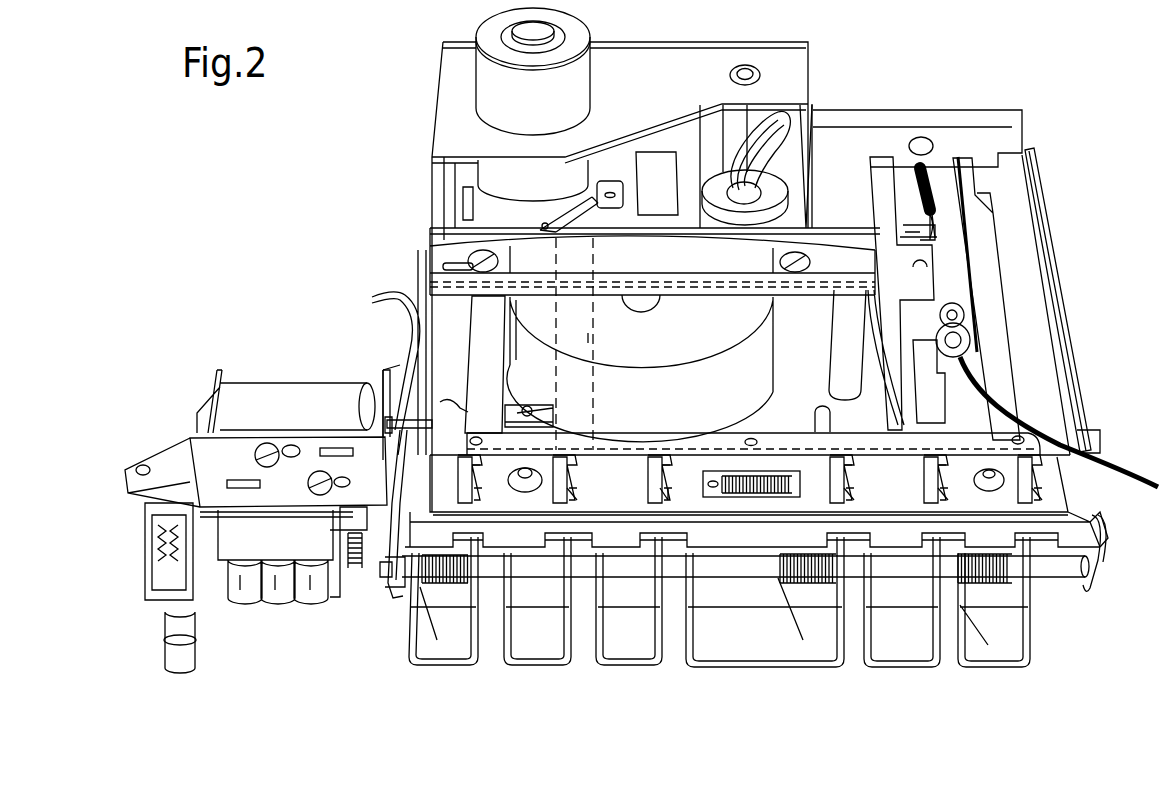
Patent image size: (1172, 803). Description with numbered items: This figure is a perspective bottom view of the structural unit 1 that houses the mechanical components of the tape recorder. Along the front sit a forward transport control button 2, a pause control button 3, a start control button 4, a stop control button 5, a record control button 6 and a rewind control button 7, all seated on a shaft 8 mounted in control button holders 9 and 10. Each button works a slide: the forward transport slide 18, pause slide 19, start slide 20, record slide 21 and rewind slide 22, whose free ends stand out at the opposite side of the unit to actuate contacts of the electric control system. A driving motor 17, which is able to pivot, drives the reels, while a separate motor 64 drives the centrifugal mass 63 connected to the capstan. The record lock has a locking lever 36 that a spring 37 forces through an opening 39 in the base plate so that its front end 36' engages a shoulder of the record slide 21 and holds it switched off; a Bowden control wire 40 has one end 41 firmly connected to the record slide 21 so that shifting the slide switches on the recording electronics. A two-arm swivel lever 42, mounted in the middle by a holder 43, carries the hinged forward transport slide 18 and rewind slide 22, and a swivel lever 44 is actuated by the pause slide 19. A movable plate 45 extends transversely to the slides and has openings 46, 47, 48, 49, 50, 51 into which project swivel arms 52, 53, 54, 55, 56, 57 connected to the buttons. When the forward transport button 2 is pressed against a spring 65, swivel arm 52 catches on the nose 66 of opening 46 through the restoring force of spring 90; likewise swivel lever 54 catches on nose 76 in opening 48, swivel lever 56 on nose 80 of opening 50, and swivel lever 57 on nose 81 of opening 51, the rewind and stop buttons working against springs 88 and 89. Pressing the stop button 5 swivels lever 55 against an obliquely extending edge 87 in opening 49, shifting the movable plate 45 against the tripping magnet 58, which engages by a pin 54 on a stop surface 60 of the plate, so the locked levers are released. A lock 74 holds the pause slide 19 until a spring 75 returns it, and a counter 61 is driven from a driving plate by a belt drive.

The structural unit 1 is at (1063, 266).
The forward transport control button 2 is at (436, 668).
The pause control button 3 is at (532, 668).
The start control button 4 is at (624, 668).
The stop control button 5 is at (758, 668).
The record control button 6 is at (892, 668).
The rewind control button 7 is at (986, 668).
The shaft 8 is at (726, 566).
The control button holder 9 is at (1080, 585).
The control button holder 10 is at (393, 598).
The driving motor 17 is at (788, 208).
The forward transport slide 18 is at (494, 355).
The pause slide 19 is at (588, 338).
The start slide 20 is at (664, 192).
The record slide 21 is at (915, 293).
The rewind slide 22 is at (1001, 301).
The locking lever 36 is at (943, 226).
The front end of locking lever 36' is at (937, 250).
The spring 37 is at (910, 166).
The opening 39 is at (916, 215).
The Bowden control wire 40 is at (1000, 420).
The end of Bowden control wire 41 is at (972, 330).
The two-arm swivel lever 42 is at (925, 433).
The holder 43 is at (753, 438).
The swivel lever 44 is at (522, 406).
The movable plate 45 is at (968, 455).
The opening 46 is at (460, 497).
The opening 47 is at (580, 478).
The opening 48 is at (647, 484).
The opening 49 is at (833, 493).
The opening 50 is at (926, 487).
The opening 51 is at (1018, 492).
The swivel arm 52 is at (478, 492).
The swivel arm 53 is at (577, 496).
The swivel lever 54 is at (385, 422).
The swivel lever 55 is at (852, 497).
The swivel lever 56 is at (948, 496).
The swivel lever 57 is at (1046, 497).
The tripping magnet 58 is at (262, 388).
The stop surface 60 is at (440, 402).
The counter 61 is at (262, 615).
The centrifugal mass 63 is at (771, 362).
The motor 64 is at (589, 82).
The spring 65 is at (440, 582).
The nose 66 is at (480, 474).
The lock 74 is at (584, 194).
The spring 75 is at (543, 232).
The nose 76 is at (666, 474).
The nose 80 is at (942, 472).
The nose 81 is at (1040, 470).
The obliquely extending edge 87 is at (846, 478).
The spring 88 is at (982, 556).
The spring 89 is at (784, 556).
The spring 90 is at (790, 470).